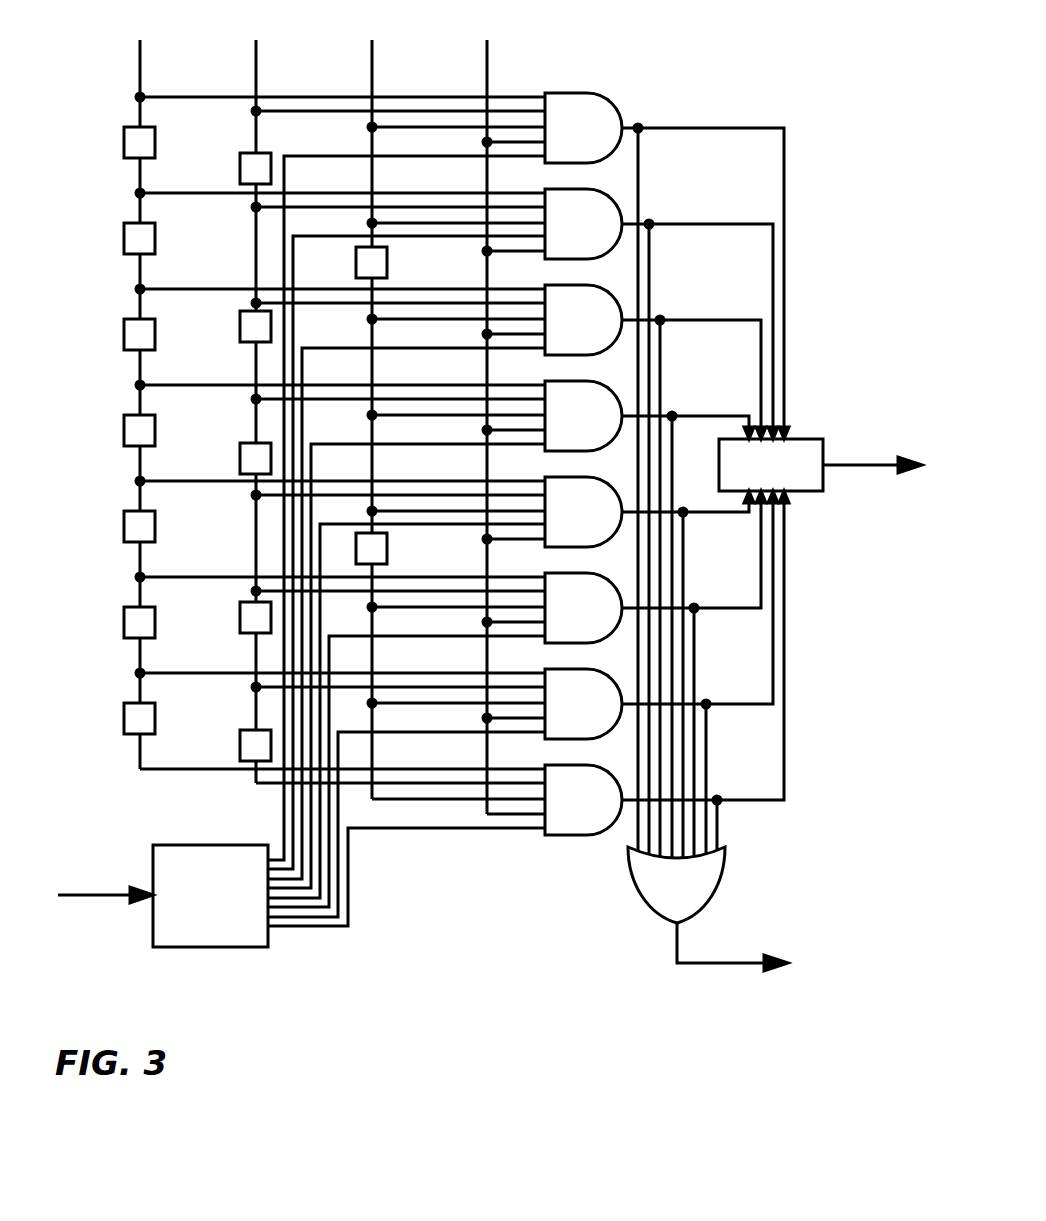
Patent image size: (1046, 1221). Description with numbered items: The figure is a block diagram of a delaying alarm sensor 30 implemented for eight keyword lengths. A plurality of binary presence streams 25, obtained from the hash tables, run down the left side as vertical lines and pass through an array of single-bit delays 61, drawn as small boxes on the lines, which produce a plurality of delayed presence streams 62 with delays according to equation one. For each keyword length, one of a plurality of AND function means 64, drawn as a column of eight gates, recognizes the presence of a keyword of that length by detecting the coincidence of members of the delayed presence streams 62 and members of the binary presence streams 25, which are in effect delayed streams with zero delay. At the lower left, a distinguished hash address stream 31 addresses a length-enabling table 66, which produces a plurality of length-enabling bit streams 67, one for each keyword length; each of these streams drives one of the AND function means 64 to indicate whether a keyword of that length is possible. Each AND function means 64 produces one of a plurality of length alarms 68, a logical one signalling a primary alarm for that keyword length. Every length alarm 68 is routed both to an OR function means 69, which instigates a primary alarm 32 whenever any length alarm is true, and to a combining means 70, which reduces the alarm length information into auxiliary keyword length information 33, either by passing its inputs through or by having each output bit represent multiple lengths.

The binary presence streams 25 is at (256, 52).
The AND function means 64 is at (586, 189).
The single-bit delays 61 is at (124, 238).
The delayed presence streams 62 is at (253, 425).
The length-enabling bit streams 67 is at (297, 927).
The length alarms 68 is at (700, 224).
The combining means 70 is at (805, 492).
The keyword length information 33 is at (852, 466).
The length-enabling table 66 is at (153, 940).
The distinguished hash address stream 31 is at (148, 876).
The OR function means 69 is at (632, 887).
The primary alarm 32 is at (676, 938).
The delaying alarm sensor 30 is at (290, 1026).